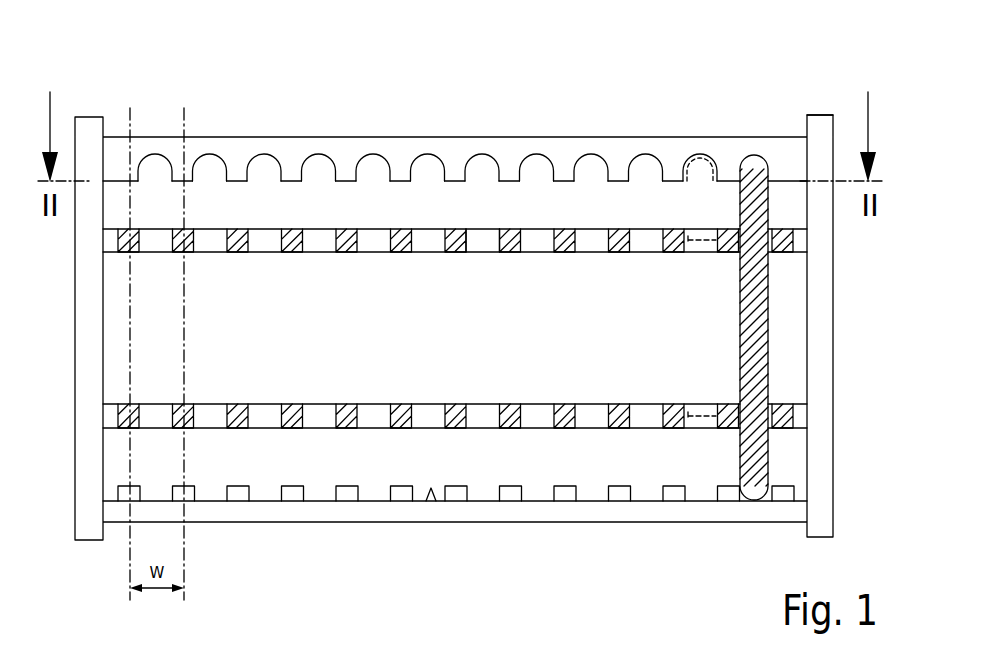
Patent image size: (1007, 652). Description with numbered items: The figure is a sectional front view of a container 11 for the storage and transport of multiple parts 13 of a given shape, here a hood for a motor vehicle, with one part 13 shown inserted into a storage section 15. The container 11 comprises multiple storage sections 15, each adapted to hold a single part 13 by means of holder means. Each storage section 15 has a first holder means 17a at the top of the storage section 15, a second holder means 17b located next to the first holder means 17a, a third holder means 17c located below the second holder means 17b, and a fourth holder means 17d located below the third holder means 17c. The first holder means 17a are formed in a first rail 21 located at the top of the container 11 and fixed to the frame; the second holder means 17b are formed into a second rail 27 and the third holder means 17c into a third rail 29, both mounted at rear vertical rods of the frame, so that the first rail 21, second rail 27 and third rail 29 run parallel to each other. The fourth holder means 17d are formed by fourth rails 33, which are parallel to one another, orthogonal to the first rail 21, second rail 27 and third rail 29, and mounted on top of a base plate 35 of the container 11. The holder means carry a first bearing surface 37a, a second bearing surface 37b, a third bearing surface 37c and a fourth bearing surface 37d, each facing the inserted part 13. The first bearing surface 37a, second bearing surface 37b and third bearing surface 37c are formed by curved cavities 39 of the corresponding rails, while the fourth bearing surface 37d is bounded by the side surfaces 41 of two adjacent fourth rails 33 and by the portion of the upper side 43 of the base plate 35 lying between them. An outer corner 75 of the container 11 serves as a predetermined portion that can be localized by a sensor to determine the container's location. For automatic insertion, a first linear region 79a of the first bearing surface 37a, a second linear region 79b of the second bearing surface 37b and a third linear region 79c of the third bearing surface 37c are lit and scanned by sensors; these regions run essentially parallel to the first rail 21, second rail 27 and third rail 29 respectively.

The container 11 is at (112, 66).
The part 13 is at (762, 327).
The storage section 15 is at (768, 70).
The first holder means 17a is at (778, 160).
The second holder means 17b is at (722, 284).
The third holder means 17c is at (724, 386).
The fourth holder means 17d is at (723, 471).
The first rail 21 is at (297, 150).
The second rail 27 is at (266, 253).
The third rail 29 is at (270, 415).
The fourth rails 33 is at (672, 503).
The base plate 35 is at (265, 512).
The first bearing surface 37a is at (470, 166).
The second bearing surface 37b is at (485, 242).
The third bearing surface 37c is at (487, 418).
The fourth bearing surface 37d is at (500, 487).
The curved cavities 39 is at (500, 172).
The side surfaces 41 is at (482, 503).
The upper side 43 is at (428, 505).
The outer corner 75 is at (837, 125).
The first linear region 79a is at (705, 175).
The second linear region 79b is at (680, 255).
The third linear region 79c is at (690, 403).